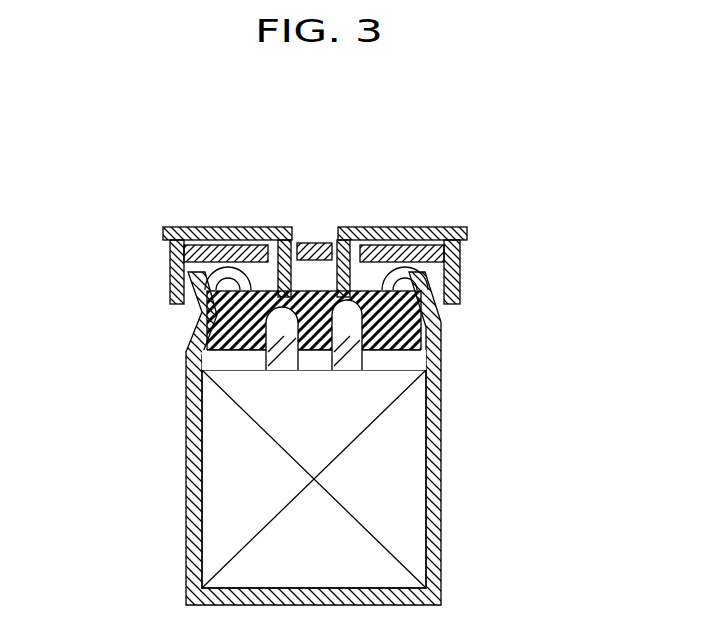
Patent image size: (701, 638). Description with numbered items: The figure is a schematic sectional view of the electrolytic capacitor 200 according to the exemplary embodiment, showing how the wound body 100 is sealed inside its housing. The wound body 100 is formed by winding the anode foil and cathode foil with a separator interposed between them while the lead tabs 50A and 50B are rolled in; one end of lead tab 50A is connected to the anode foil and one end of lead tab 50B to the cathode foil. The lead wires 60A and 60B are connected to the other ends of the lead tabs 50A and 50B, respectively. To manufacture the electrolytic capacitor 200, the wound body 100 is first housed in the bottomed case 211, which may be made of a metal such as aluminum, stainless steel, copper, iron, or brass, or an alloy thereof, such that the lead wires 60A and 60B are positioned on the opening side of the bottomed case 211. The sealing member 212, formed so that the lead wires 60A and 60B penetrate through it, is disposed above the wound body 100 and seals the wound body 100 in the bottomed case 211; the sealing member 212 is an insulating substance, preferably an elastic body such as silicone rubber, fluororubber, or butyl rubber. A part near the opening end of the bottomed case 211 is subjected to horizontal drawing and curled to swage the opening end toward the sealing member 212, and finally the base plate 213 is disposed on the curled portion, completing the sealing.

The electrolytic capacitor 200 is at (316, 236).
The lead wire 60A is at (225, 227).
The lead wire 60B is at (408, 227).
The base plate 213 is at (313, 242).
The sealing member 212 is at (392, 327).
The bottomed case 211 is at (438, 438).
The wound body 100 is at (233, 461).
The lead tab 50A is at (237, 325).
The lead tab 50B is at (288, 331).